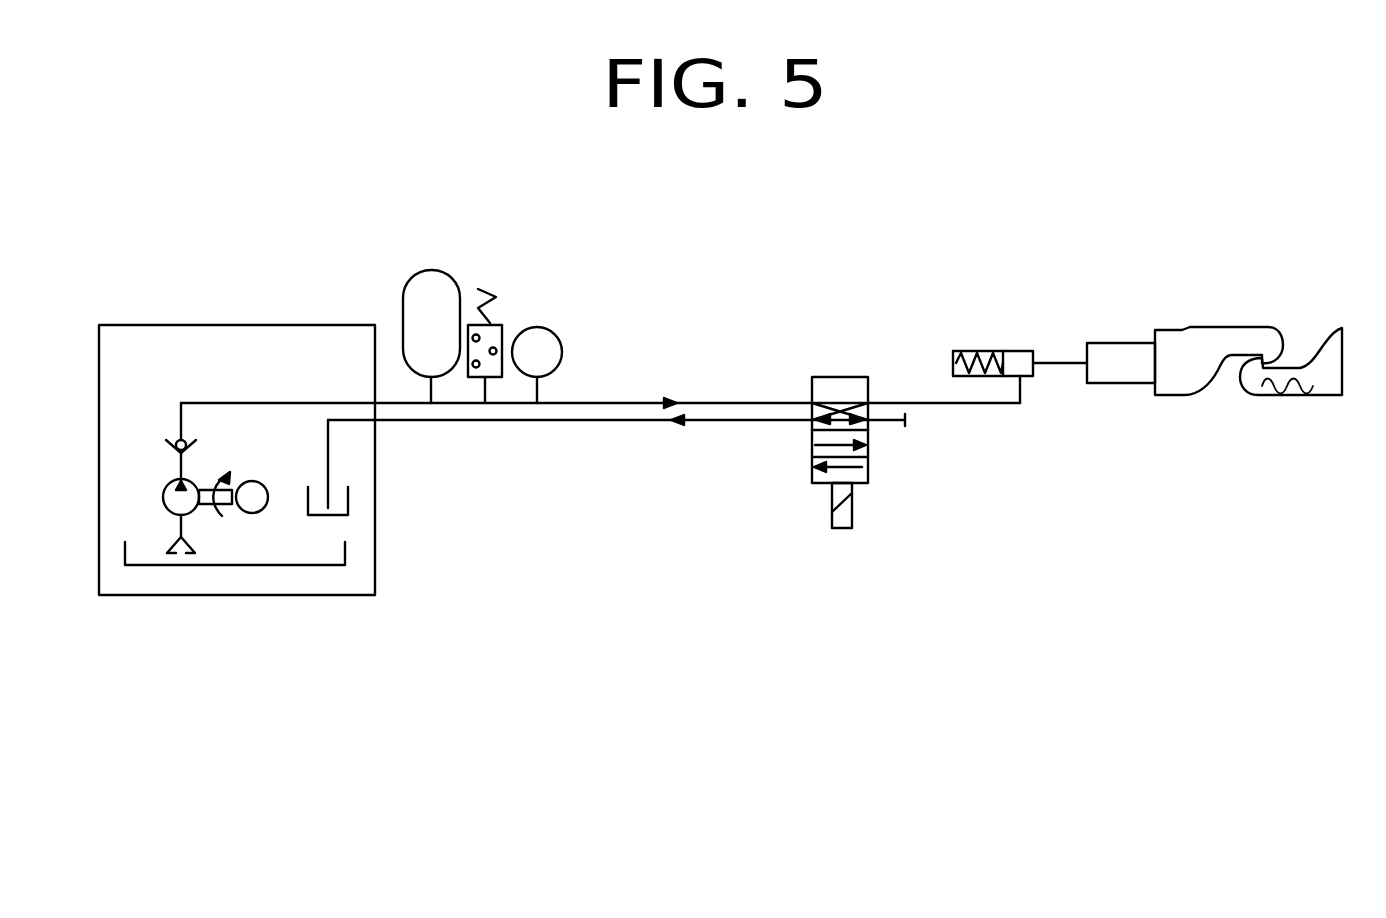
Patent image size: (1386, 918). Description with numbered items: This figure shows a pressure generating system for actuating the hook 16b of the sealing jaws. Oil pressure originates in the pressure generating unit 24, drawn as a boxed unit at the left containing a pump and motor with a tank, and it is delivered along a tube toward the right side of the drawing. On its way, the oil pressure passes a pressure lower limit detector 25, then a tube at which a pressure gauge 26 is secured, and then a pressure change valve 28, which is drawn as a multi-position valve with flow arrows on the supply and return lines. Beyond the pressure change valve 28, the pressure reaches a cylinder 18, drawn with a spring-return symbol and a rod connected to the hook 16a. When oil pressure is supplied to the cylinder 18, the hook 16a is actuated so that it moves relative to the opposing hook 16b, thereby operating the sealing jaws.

The pressure generating unit 24 is at (375, 512).
The pressure lower limit detector 25 is at (490, 323).
The pressure gauge 26 is at (563, 336).
The pressure change valve 28 is at (840, 377).
The cylinder 18 is at (1015, 351).
The hook 16a is at (1207, 340).
The hook 16b is at (1318, 348).